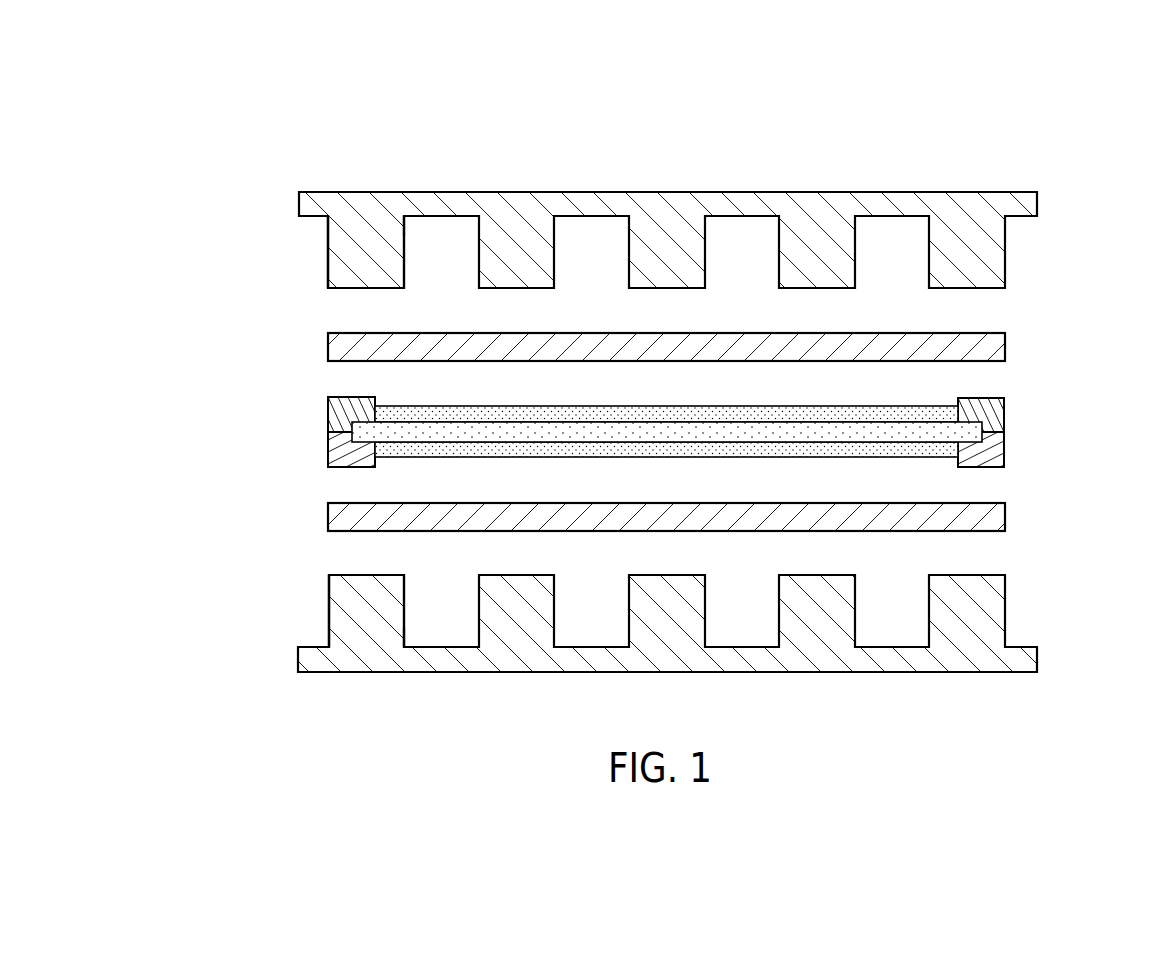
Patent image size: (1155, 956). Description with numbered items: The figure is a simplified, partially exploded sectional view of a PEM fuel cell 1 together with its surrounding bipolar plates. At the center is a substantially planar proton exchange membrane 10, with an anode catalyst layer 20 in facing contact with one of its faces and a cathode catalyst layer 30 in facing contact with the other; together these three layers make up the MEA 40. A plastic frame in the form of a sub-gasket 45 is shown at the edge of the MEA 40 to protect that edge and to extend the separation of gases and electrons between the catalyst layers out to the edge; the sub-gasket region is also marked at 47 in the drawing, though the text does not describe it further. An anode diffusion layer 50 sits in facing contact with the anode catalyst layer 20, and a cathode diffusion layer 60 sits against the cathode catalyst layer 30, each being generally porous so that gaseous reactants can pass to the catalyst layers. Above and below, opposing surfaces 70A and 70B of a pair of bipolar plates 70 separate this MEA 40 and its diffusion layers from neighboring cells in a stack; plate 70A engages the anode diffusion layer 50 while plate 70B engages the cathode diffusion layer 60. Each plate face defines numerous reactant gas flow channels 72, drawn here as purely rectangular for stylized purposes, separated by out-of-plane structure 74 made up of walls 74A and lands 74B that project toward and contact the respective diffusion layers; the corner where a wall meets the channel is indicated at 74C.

The PEM fuel cell 1 is at (659, 399).
The proton exchange membrane 10 is at (583, 430).
The anode catalyst layer 20 is at (497, 406).
The cathode catalyst layer 30 is at (497, 458).
The MEA 40 is at (664, 428).
The sub-gasket 45 is at (1004, 410).
The second frame portion 47 is at (992, 436).
The anode diffusion layer 50 is at (328, 352).
The cathode diffusion layer 60 is at (328, 521).
The bipolar plate 70 is at (672, 411).
The first plate surface 70A is at (298, 203).
The second plate surface 70B is at (298, 658).
The reactant gas flow channels 72 is at (906, 619).
The three-dimensional structure 74 is at (248, 235).
The walls 74A is at (328, 243).
The lands 74B is at (343, 288).
The land corner 74C is at (414, 228).